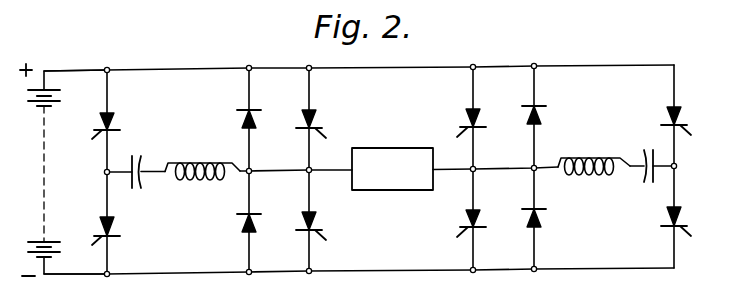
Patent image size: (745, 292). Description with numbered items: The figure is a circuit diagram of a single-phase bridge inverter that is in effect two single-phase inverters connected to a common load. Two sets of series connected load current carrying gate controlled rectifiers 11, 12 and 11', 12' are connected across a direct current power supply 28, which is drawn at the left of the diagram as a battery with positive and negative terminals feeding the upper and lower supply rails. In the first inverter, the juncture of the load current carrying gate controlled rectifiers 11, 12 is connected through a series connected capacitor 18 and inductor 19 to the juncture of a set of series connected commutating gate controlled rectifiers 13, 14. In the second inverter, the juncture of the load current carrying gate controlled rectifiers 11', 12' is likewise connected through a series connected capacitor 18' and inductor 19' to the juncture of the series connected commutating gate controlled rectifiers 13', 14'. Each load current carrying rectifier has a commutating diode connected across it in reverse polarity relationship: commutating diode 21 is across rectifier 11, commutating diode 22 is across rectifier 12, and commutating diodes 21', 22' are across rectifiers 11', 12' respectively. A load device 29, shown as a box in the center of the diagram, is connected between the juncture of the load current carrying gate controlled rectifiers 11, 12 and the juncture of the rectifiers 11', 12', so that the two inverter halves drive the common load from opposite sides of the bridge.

The load current carrying gate controlled rectifier 11 is at (318, 119).
The load current carrying gate controlled rectifier 12 is at (318, 222).
The commutating gate controlled rectifier 13 is at (115, 123).
The commutating gate controlled rectifier 14 is at (115, 229).
The capacitor 18 is at (149, 184).
The inductor 19 is at (202, 154).
The commutating diode 21 is at (240, 109).
The commutating diode 22 is at (240, 216).
The direct current power supply 28 is at (44, 172).
The load device 29 is at (395, 148).
The load current carrying gate controlled rectifier 11' is at (463, 118).
The load current carrying gate controlled rectifier 12' is at (463, 219).
The commutating gate controlled rectifier 13' is at (686, 116).
The commutating gate controlled rectifier 14' is at (686, 217).
The capacitor 18' is at (642, 154).
The inductor 19' is at (594, 151).
The commutating diode 21' is at (543, 103).
The commutating diode 22' is at (550, 215).